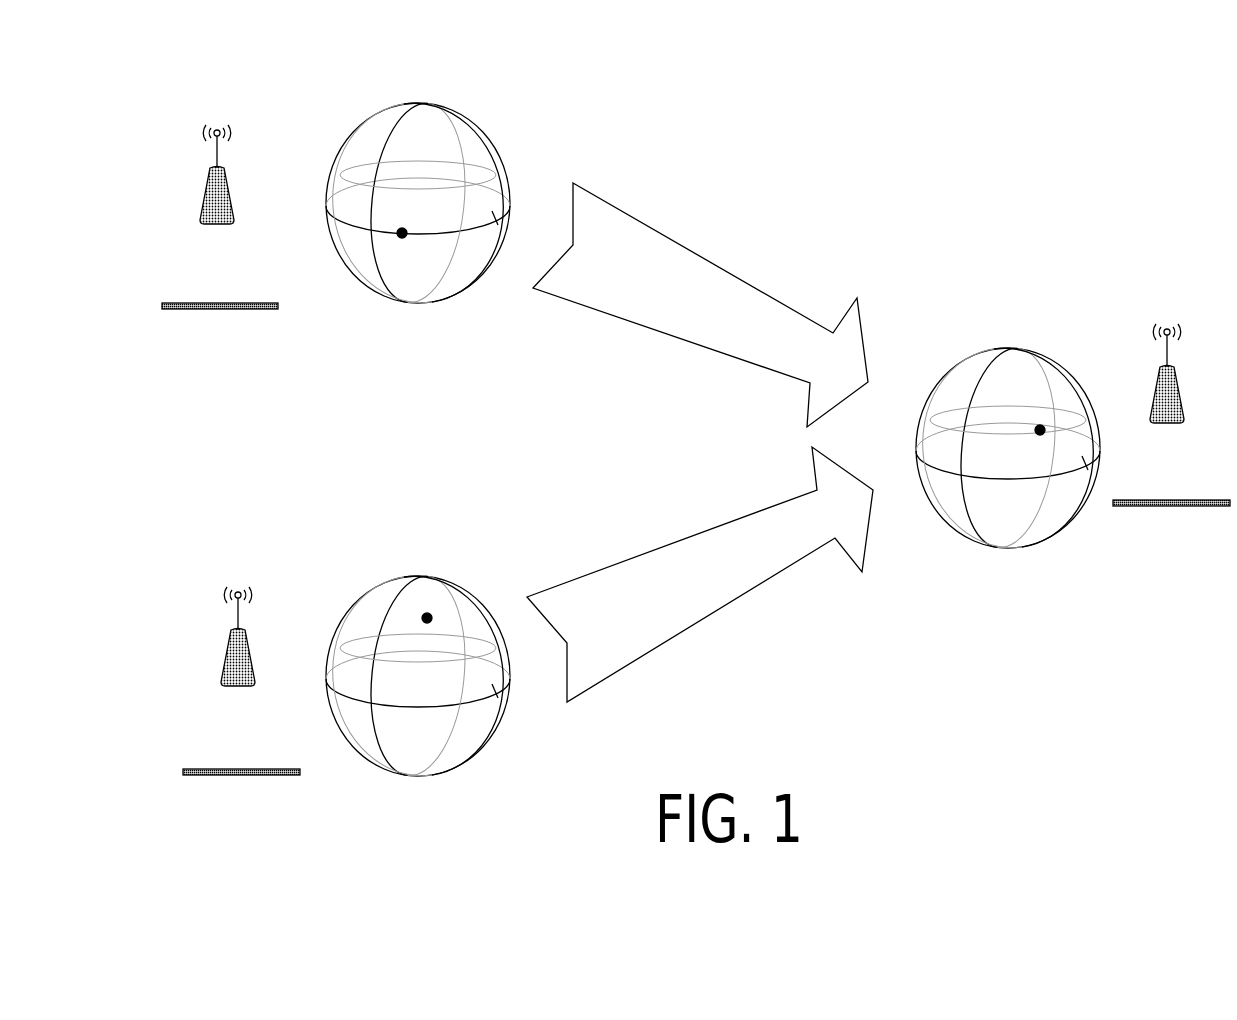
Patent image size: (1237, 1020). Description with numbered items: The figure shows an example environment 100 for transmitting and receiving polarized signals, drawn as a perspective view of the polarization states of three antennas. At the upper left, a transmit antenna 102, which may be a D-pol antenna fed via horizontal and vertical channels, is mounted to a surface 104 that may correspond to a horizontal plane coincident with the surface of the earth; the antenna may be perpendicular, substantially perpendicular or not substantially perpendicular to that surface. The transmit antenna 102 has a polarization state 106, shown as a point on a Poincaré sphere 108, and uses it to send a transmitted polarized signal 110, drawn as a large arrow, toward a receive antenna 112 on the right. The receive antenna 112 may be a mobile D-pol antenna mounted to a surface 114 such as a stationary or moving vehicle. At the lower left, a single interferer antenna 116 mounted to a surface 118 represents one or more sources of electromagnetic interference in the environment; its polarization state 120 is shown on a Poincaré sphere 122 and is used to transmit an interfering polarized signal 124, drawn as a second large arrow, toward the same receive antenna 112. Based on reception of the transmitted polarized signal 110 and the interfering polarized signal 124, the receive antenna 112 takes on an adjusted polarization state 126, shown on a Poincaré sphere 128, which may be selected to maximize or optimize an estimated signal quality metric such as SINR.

The environment 100 is at (1139, 93).
The transmit antenna 102 is at (205, 294).
The surface 104 is at (167, 314).
The polarization state 106 is at (409, 245).
The Poincaré sphere 108 is at (428, 100).
The transmitted polarized signal 110 is at (700, 305).
The receive antenna 112 is at (1155, 491).
The surface 114 is at (1119, 509).
The interferer antenna 116 is at (226, 755).
The surface 118 is at (187, 780).
The polarization state 120 is at (433, 628).
The Poincaré sphere 122 is at (428, 572).
The interfering polarized signal 124 is at (700, 574).
The adjusted polarization state 126 is at (1046, 440).
The Poincaré sphere 128 is at (1018, 345).